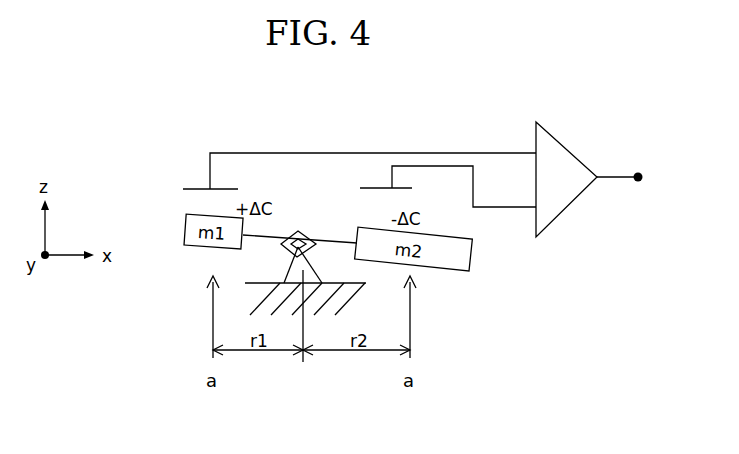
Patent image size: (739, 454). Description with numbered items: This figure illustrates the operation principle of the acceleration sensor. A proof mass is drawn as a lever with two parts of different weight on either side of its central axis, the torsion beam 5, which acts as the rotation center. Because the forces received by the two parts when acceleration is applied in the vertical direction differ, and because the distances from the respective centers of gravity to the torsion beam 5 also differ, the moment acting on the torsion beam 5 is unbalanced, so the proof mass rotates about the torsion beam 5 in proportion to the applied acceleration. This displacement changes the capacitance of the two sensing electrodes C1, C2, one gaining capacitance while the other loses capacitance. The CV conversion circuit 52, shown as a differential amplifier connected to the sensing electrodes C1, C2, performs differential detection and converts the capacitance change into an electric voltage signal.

The torsion beam 5 is at (298, 232).
The CV conversion circuit 52 is at (568, 172).
The sensing electrode C1 is at (195, 207).
The sensing electrode C2 is at (378, 200).